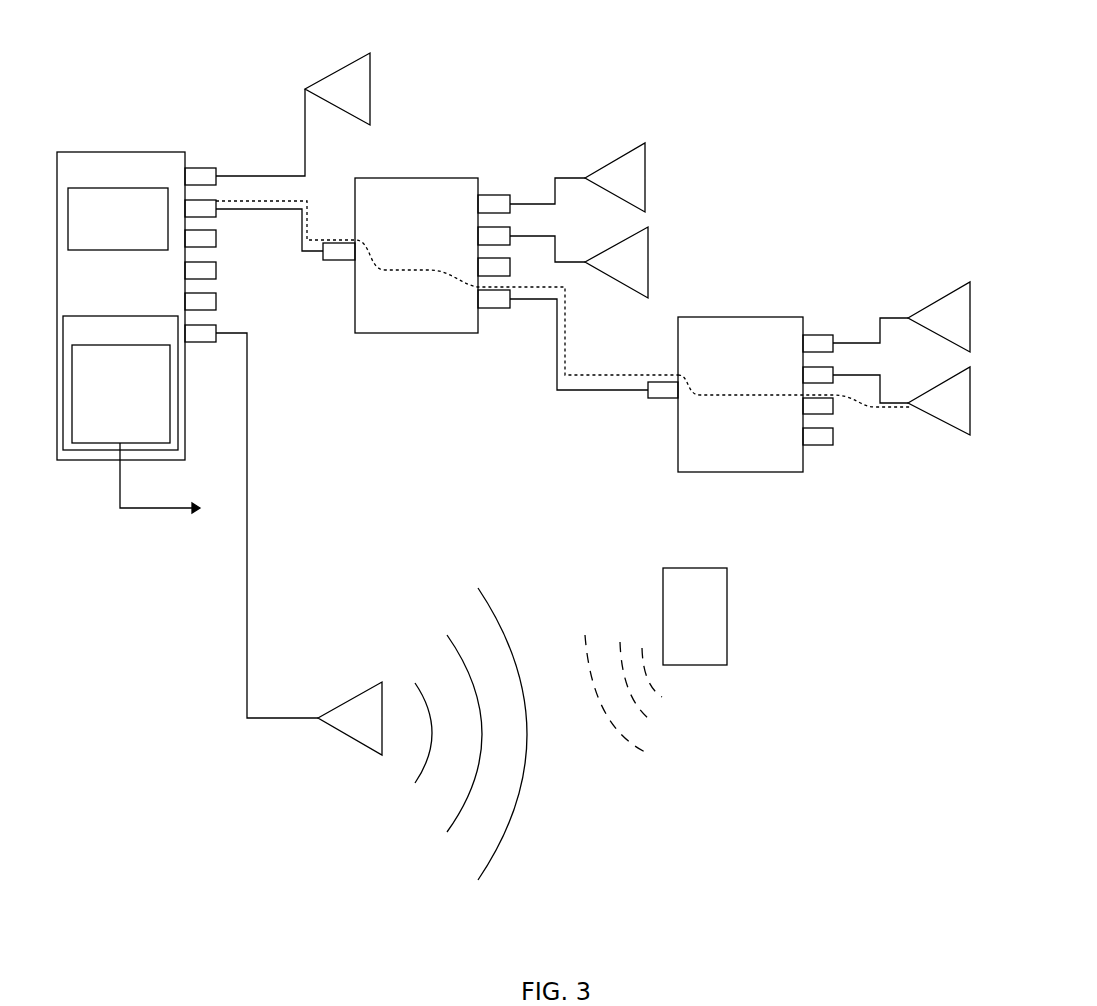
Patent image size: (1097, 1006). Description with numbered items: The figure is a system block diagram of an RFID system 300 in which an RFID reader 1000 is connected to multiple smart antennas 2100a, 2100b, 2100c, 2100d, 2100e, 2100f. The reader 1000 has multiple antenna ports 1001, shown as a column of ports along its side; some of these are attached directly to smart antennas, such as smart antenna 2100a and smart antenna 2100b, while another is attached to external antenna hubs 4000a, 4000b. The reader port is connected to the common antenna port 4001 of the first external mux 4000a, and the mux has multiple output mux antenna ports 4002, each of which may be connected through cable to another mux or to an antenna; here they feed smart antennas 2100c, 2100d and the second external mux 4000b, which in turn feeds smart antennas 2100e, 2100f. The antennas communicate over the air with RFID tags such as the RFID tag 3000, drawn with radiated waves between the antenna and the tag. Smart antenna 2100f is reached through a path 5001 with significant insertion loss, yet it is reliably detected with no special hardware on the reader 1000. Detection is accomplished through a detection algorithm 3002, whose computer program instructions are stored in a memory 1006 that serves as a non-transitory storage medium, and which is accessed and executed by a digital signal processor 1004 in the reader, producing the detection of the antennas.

The RFID system 300 is at (205, 842).
The RFID reader 1000 is at (77, 152).
The antenna ports 1001 is at (226, 154).
The digital signal processor (DSP) 1004 is at (118, 250).
The memory 1006 is at (122, 316).
The detection algorithm 3002 is at (144, 450).
The smart antenna 2100a is at (370, 71).
The smart antenna 2100b is at (353, 695).
The smart antenna 2100c is at (645, 170).
The smart antenna 2100d is at (648, 258).
The smart antenna 2100e is at (942, 295).
The smart antenna 2100f is at (970, 432).
The external antenna multiplexer 4000a is at (418, 178).
The external antenna multiplexer 4000b is at (727, 317).
The common antenna port 4001 is at (342, 260).
The mux antenna ports 4002 is at (488, 331).
The path 5001 is at (873, 410).
The RFID tag 3000 is at (727, 645).